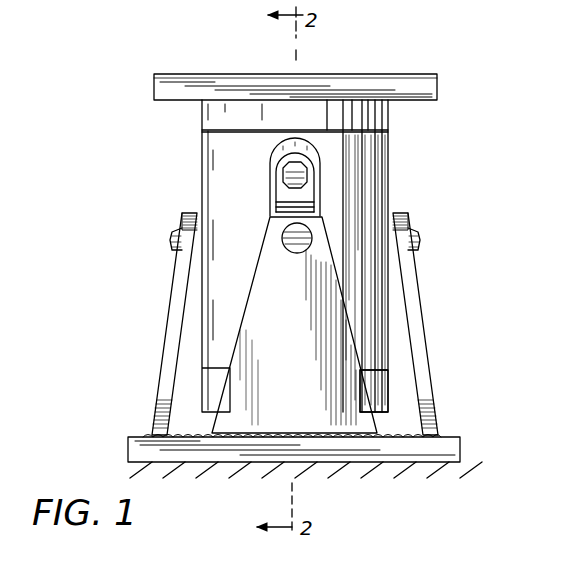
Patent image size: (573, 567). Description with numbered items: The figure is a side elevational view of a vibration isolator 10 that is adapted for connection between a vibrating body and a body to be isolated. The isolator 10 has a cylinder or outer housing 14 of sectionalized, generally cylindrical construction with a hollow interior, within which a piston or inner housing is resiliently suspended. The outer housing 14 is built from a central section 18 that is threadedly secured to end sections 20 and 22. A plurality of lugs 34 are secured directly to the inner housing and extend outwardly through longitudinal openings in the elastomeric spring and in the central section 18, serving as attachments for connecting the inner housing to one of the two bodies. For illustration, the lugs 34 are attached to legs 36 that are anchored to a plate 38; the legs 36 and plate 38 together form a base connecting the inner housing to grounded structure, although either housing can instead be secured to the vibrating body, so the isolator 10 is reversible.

The vibration isolator 10 is at (103, 109).
The outer housing 14 is at (200, 166).
The central section 18 is at (370, 195).
The end section 20 is at (437, 87).
The end section 22 is at (387, 392).
The lugs 34 is at (277, 190).
The legs 36 is at (303, 342).
The plate 38 is at (128, 447).